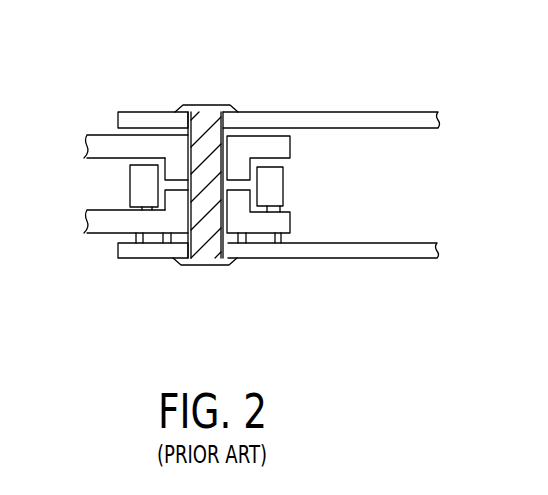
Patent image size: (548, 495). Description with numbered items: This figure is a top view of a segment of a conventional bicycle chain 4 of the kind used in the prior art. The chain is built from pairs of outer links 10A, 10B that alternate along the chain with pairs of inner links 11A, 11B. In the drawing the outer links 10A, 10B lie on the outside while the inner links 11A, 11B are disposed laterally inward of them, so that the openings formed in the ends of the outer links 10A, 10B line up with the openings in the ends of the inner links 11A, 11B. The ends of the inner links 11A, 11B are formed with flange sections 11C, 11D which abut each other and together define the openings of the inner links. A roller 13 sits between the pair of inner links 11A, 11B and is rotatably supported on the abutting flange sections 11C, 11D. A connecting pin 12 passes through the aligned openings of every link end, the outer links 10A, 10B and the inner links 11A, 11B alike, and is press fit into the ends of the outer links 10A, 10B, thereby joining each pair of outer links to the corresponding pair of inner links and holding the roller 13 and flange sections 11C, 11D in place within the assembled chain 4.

The conventional chain 4 is at (205, 68).
The outer link 10A is at (260, 120).
The outer link 10B is at (328, 248).
The inner link 11A is at (102, 128).
The inner link 11B is at (130, 220).
The flange section 11C is at (176, 161).
The flange section 11D is at (178, 202).
The connecting pin 12 is at (212, 258).
The roller 13 is at (273, 185).